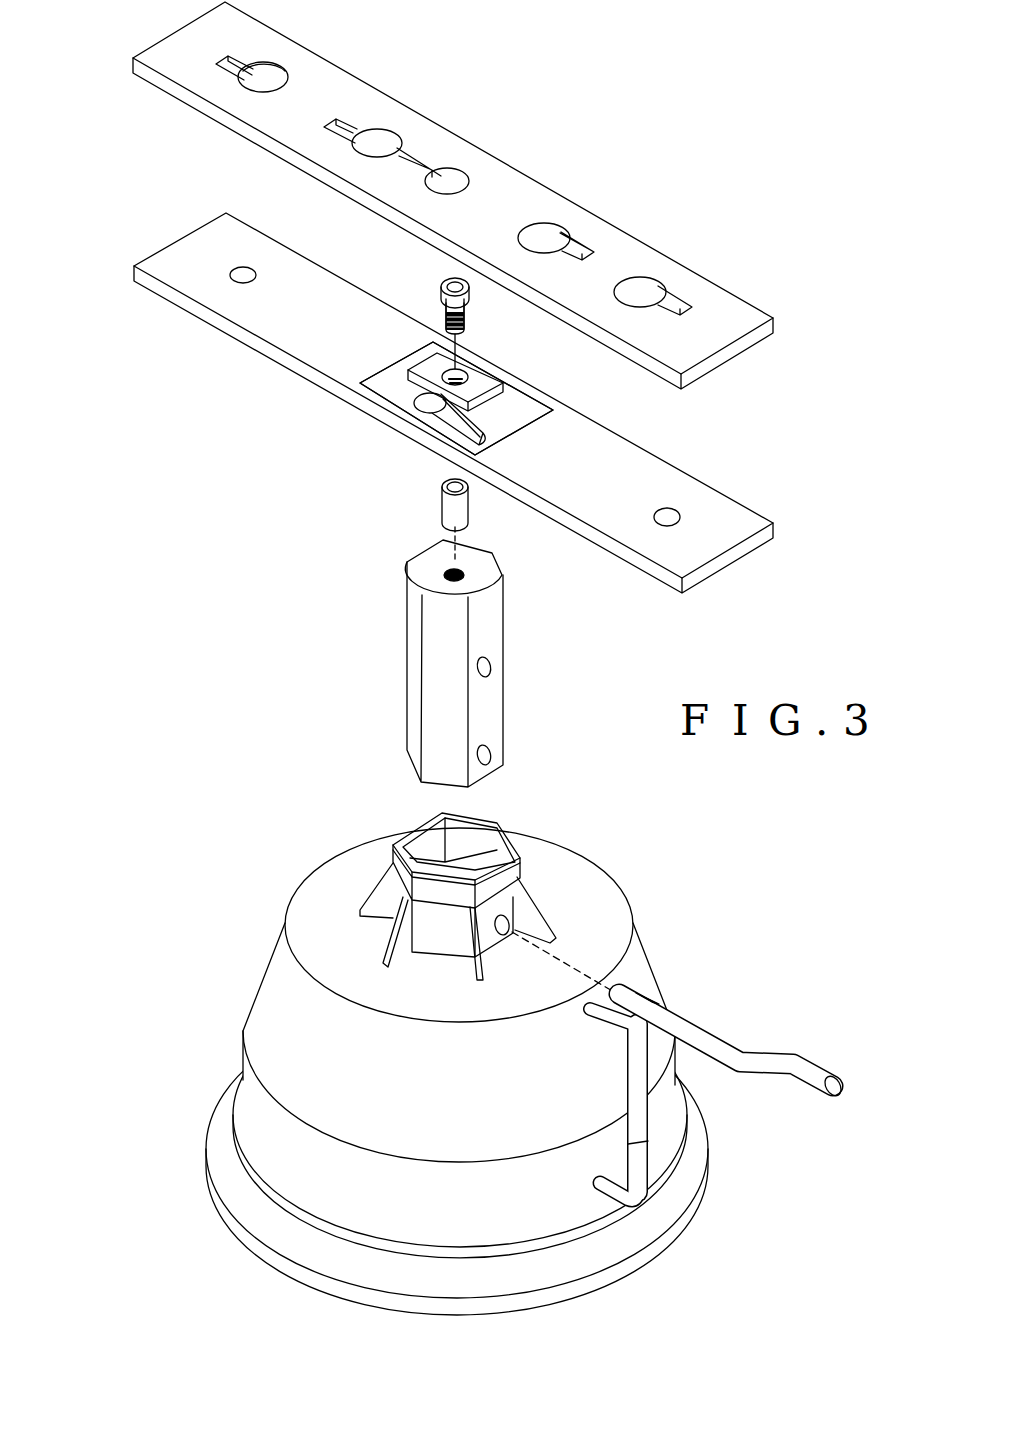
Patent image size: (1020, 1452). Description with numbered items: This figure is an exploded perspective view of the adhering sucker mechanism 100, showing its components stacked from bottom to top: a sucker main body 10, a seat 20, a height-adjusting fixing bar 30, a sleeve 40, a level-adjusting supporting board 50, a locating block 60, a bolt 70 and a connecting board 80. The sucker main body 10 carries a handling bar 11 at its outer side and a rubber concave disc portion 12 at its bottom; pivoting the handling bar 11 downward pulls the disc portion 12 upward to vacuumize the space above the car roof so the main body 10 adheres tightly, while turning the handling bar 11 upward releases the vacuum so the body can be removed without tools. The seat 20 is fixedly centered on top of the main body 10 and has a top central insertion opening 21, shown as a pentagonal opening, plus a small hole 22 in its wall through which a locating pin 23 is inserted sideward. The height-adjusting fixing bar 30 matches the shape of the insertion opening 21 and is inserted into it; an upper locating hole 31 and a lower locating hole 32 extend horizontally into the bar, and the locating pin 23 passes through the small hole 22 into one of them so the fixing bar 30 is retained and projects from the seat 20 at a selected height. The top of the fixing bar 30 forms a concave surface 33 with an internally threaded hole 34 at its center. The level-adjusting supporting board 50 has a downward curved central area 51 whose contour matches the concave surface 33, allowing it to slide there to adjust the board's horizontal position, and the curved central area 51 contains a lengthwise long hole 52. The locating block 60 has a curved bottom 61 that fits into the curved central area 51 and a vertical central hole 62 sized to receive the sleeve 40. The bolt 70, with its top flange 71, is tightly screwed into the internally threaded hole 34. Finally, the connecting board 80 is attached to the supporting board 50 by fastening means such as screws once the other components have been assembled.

The adhering sucker mechanism 100 is at (109, 184).
The sucker main body 10 is at (268, 990).
The handling bar 11 is at (637, 1060).
The rubber concave disc portion 12 is at (648, 1228).
The seat 20 is at (513, 876).
The insertion opening 21 is at (432, 840).
The small hole 22 is at (507, 926).
The locating pin 23 is at (720, 1045).
The height-adjusting fixing bar 30 is at (407, 675).
The upper locating hole 31 is at (495, 667).
The lower locating hole 32 is at (495, 752).
The concave surface 33 is at (427, 561).
The internally threaded hole 34 is at (466, 573).
The sleeve 40 is at (462, 515).
The level-adjusting supporting board 50 is at (650, 466).
The curved central area 51 is at (390, 392).
The long hole 52 is at (443, 428).
The locating block 60 is at (483, 381).
The curved bottom 61 is at (400, 382).
The vertical central hole 62 is at (473, 378).
The bolt 70 is at (447, 283).
The top flange 71 is at (470, 302).
The connecting board 80 is at (509, 176).